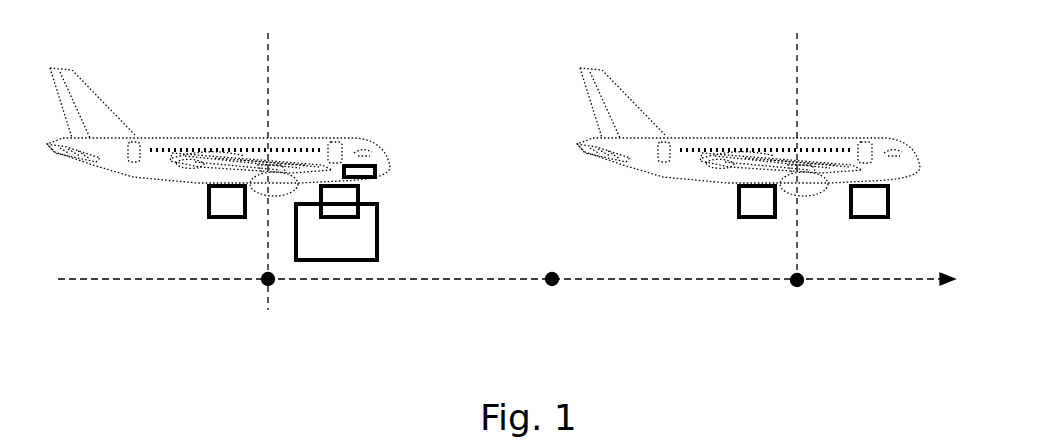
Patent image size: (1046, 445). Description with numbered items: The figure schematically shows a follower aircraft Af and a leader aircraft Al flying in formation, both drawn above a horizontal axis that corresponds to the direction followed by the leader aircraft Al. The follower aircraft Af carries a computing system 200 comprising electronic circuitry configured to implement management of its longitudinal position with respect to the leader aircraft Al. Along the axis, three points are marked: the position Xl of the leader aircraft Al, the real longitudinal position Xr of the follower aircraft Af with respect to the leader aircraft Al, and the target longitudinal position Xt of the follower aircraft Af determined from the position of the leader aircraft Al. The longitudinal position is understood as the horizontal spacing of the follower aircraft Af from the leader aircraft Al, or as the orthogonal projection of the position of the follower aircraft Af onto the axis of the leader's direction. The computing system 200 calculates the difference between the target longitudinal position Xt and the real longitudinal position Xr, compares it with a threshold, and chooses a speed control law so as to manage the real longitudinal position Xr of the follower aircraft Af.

The follower aircraft Af is at (153, 165).
The leader aircraft Al is at (748, 142).
The computing system 200 is at (375, 178).
The real longitudinal position Xr is at (263, 284).
The target longitudinal position Xt is at (548, 286).
The position of the leader aircraft Xl is at (794, 287).